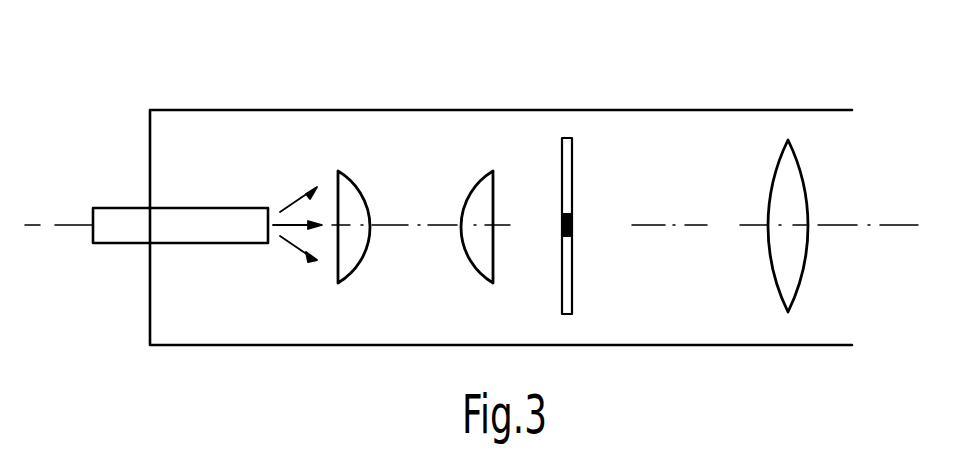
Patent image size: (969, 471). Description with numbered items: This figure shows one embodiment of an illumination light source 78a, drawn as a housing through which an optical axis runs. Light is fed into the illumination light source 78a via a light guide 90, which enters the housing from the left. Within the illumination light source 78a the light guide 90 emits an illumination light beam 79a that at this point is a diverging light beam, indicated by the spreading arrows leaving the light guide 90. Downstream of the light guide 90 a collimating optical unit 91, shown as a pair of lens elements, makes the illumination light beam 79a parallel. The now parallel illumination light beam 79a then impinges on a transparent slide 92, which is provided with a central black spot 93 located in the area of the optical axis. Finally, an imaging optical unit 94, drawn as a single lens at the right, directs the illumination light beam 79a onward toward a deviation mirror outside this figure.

The illumination light source 78a is at (678, 130).
The light guide 90 is at (192, 225).
The illumination light beam 79a is at (287, 205).
The collimating optical unit 91 is at (414, 202).
The transparent slide 92 is at (572, 157).
The central black spot 93 is at (574, 228).
The imaging optical unit 94 is at (790, 193).